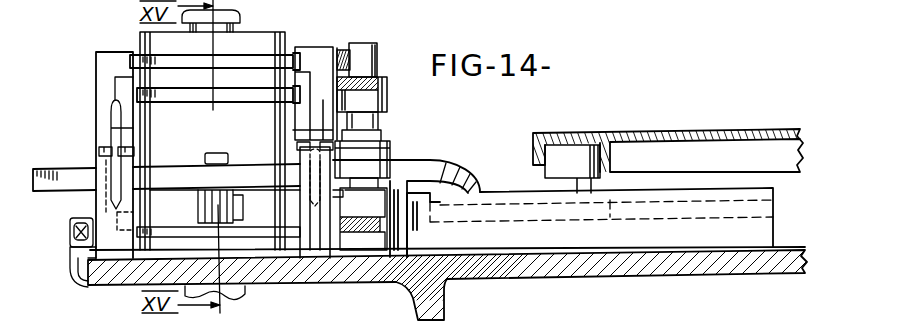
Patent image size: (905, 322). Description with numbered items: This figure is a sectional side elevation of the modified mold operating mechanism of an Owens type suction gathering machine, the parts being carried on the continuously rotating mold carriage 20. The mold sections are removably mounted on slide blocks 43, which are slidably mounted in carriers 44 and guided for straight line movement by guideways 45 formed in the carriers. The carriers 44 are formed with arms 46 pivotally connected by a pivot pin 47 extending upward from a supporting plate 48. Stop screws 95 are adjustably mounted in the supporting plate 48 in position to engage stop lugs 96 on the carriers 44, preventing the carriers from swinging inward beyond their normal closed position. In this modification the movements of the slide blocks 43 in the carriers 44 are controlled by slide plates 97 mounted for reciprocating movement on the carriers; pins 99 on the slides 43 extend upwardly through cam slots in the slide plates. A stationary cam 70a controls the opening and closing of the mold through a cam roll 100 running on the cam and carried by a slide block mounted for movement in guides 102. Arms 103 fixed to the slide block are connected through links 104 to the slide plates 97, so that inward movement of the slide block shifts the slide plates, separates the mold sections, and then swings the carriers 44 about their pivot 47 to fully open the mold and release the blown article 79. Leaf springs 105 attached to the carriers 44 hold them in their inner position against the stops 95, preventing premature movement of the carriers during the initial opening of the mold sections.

The mold carriage 20 is at (155, 42).
The blown article 79 is at (241, 16).
The leaf springs 105 is at (337, 46).
The pivot pin 47 is at (364, 58).
The arms 46 is at (385, 97).
The links 104 is at (363, 124).
The arms 103 is at (427, 157).
The stationary cam 70a is at (530, 150).
The cam roll 100 is at (572, 157).
The guides 102 is at (662, 198).
The guideways 45 is at (112, 78).
The carriers 44 is at (97, 84).
The slide blocks 43 is at (122, 113).
The slide plates 97 is at (73, 178).
The pins 99 is at (227, 140).
The stop screws 95 is at (70, 232).
The stop lugs 96 is at (83, 248).
The supporting plate 48 is at (303, 266).